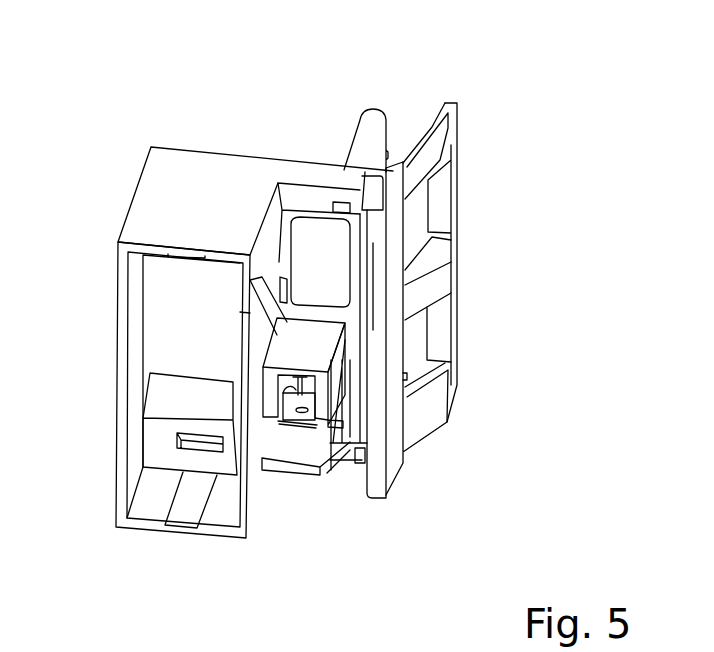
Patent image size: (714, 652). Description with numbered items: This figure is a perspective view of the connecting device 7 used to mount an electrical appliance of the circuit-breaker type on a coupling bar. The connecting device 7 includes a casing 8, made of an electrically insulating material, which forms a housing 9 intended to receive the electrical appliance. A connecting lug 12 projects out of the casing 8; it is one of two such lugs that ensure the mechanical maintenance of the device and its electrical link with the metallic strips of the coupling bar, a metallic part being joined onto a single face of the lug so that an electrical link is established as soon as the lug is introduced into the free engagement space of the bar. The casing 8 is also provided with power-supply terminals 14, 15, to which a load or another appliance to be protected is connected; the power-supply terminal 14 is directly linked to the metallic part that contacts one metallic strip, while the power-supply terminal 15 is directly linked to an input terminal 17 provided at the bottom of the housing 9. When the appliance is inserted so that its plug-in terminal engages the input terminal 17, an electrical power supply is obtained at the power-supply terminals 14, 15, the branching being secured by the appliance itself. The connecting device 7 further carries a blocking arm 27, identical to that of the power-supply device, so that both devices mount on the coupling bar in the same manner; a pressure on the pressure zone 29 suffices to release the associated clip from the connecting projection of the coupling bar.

The connecting device 7 is at (142, 127).
The casing 8 is at (123, 221).
The housing 9 is at (161, 331).
The connecting lug 12 is at (376, 111).
The power-supply terminal 14 is at (291, 392).
The power-supply terminal 15 is at (304, 428).
The input terminal 17 is at (176, 447).
The blocking arm 27 is at (442, 426).
The pressure zone 29 is at (366, 476).